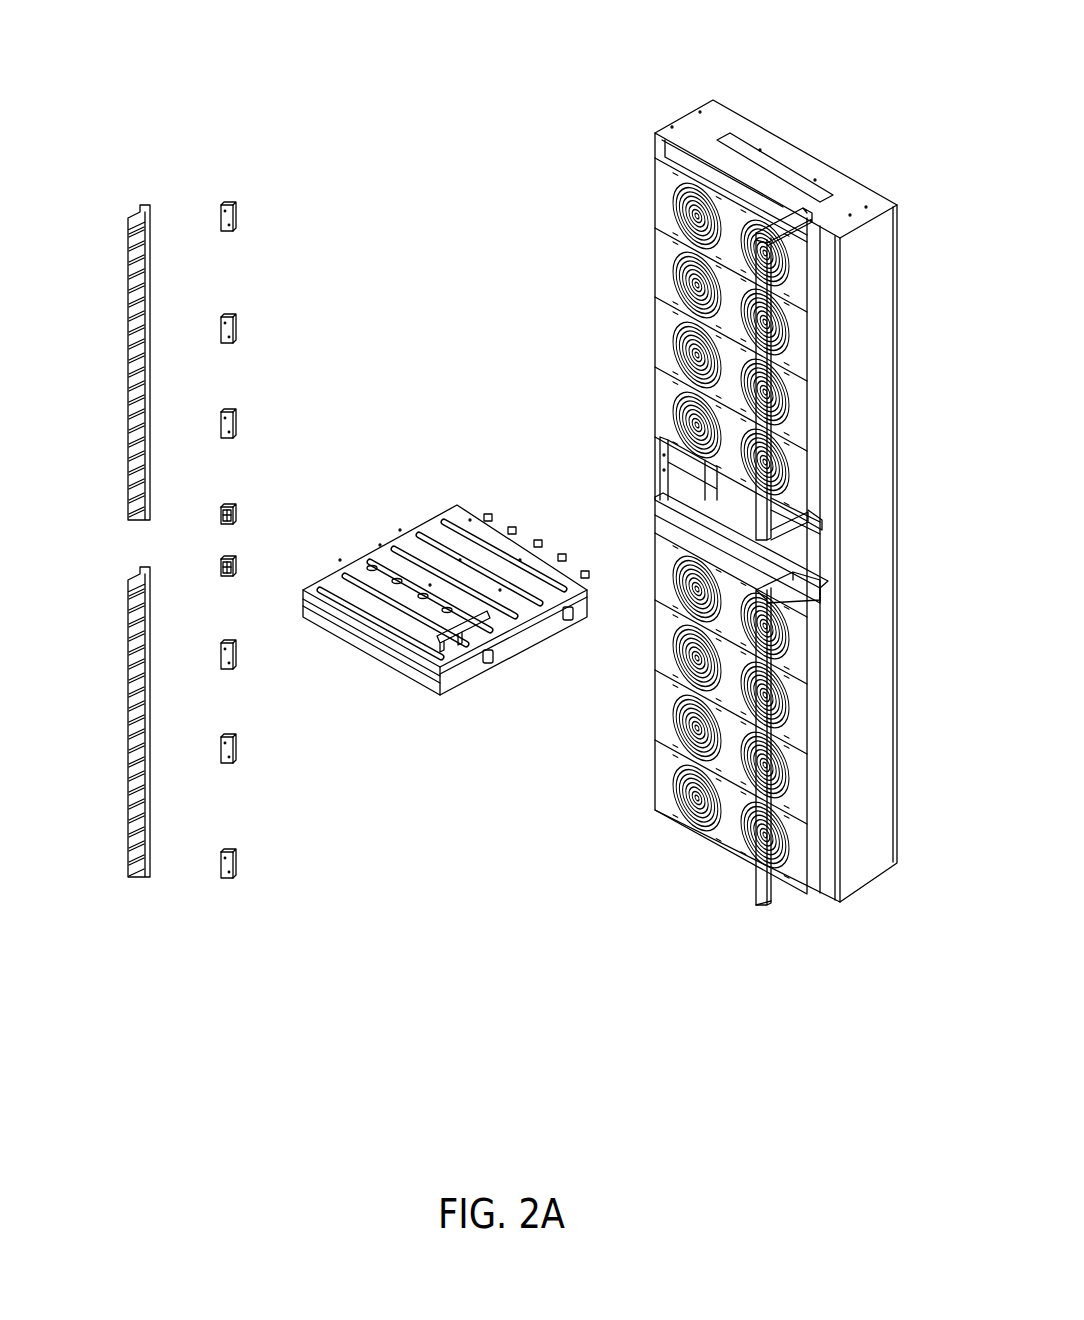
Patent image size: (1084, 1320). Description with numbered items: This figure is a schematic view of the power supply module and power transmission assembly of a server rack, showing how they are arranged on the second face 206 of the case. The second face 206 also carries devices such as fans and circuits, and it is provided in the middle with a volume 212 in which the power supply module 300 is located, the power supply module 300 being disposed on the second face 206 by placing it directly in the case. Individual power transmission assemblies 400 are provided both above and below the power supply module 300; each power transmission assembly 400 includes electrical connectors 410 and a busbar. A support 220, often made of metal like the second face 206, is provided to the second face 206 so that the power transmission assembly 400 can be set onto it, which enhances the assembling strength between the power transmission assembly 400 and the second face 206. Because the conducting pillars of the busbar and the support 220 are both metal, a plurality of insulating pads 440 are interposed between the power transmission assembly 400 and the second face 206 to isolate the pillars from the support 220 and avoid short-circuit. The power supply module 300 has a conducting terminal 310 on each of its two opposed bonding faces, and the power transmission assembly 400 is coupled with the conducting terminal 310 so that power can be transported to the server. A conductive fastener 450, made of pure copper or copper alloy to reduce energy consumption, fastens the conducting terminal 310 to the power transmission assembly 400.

The second face 206 is at (616, 86).
The volume 212 is at (733, 515).
The support 220 is at (760, 287).
The power supply module 300 is at (442, 452).
The conducting terminal 310 is at (510, 623).
The power transmission assembly 400 is at (193, 127).
The electrical connector 410 is at (128, 872).
The insulating pad 440 is at (237, 221).
The conductive fastener 450 is at (220, 563).